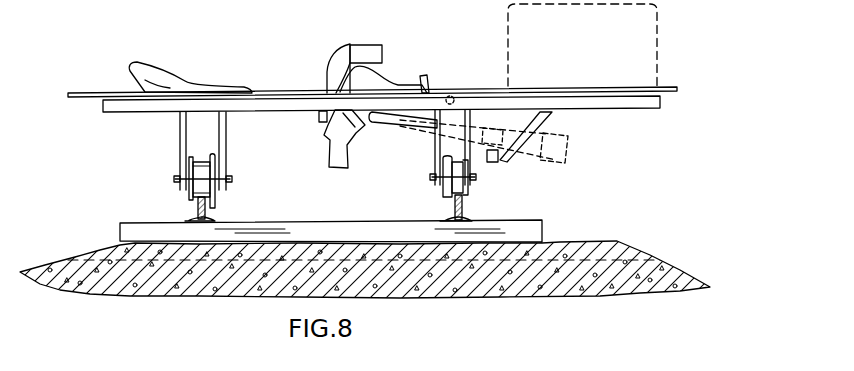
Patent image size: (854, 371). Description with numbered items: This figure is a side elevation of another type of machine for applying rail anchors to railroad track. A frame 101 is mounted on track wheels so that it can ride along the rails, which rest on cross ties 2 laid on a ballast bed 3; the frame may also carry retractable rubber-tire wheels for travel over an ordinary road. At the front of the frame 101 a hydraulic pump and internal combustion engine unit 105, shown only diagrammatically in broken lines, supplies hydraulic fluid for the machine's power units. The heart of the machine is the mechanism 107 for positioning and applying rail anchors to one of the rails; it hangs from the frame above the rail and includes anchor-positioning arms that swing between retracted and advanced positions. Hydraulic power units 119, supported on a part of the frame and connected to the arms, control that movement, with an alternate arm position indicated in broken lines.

The cross ties 2 is at (543, 228).
The ballast bed 3 is at (658, 254).
The frame 101 is at (277, 82).
The hydraulic pump and internal combustion engine unit 105 is at (660, 23).
The mechanism 107 is at (334, 42).
The hydraulic power units 119 is at (550, 135).